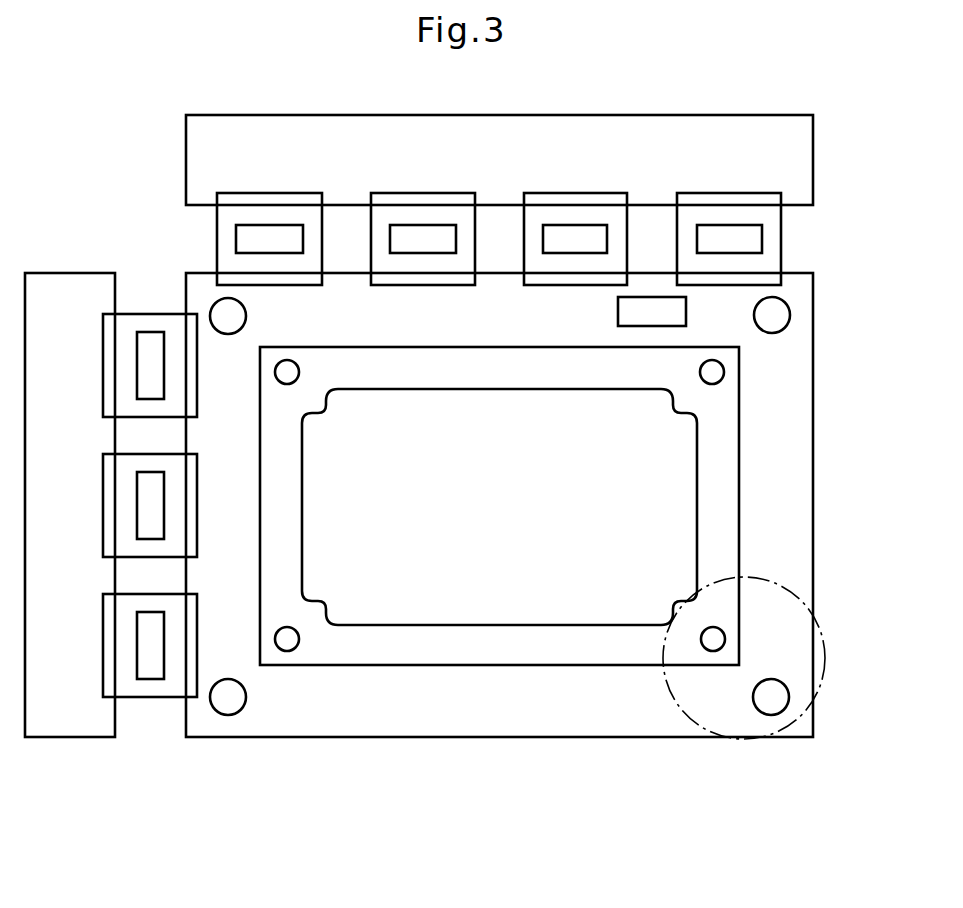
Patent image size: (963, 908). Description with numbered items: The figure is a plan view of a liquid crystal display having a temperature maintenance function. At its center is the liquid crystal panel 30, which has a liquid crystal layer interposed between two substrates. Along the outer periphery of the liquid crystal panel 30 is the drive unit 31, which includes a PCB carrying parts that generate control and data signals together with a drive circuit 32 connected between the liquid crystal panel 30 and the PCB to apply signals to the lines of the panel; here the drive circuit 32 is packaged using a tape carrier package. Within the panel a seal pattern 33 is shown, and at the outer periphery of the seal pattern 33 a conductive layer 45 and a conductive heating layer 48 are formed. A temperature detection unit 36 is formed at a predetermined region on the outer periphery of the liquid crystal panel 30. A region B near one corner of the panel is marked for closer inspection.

The liquid crystal panel 30 is at (499, 737).
The drive unit 31 is at (186, 162).
The drive circuit 32 is at (762, 238).
The seal pattern 33 is at (697, 492).
The temperature detection unit 36 is at (653, 297).
The conductive layer 45 is at (712, 372).
The conductive heating layer 48 is at (772, 315).
The detail region B is at (772, 602).